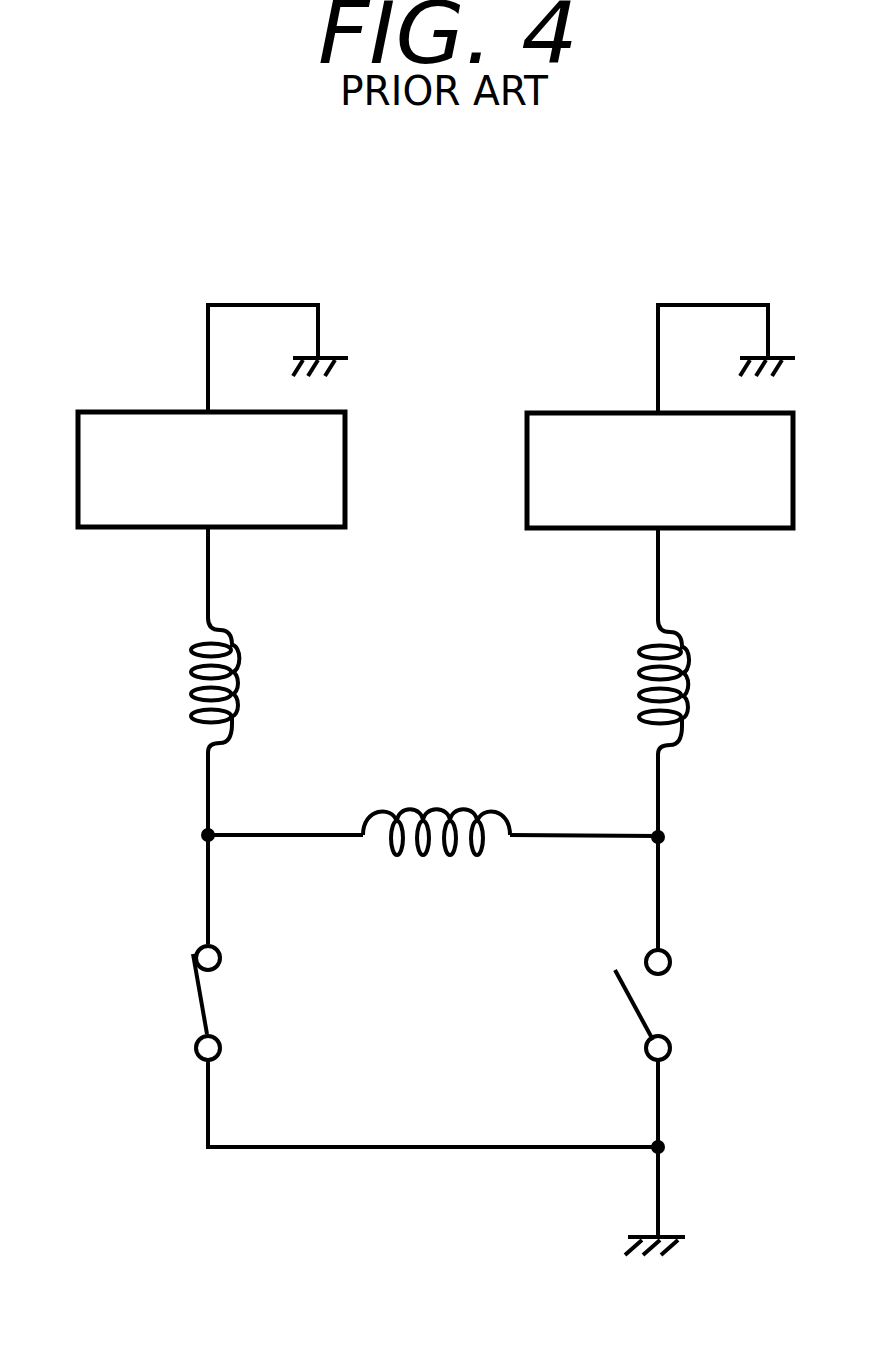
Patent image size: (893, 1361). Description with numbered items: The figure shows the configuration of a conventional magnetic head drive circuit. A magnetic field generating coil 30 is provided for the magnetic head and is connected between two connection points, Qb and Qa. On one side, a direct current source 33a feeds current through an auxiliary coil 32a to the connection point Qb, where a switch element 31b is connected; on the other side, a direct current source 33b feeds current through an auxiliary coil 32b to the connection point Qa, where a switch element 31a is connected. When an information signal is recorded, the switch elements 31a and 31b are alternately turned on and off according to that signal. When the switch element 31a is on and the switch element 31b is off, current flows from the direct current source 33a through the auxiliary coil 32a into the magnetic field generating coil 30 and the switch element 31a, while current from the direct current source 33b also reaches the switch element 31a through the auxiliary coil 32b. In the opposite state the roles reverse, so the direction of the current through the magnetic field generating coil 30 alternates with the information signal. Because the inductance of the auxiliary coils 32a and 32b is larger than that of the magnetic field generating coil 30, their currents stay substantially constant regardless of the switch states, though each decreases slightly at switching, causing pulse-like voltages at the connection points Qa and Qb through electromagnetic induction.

The magnetic field generating coil 30 is at (438, 812).
The switch element 31a is at (638, 1000).
The switch element 31b is at (198, 1000).
The auxiliary coil 32a is at (233, 678).
The auxiliary coil 32b is at (683, 678).
The direct current source 33a is at (130, 412).
The direct current source 33b is at (580, 413).
The connection point Qa is at (665, 837).
The connection point Qb is at (200, 835).